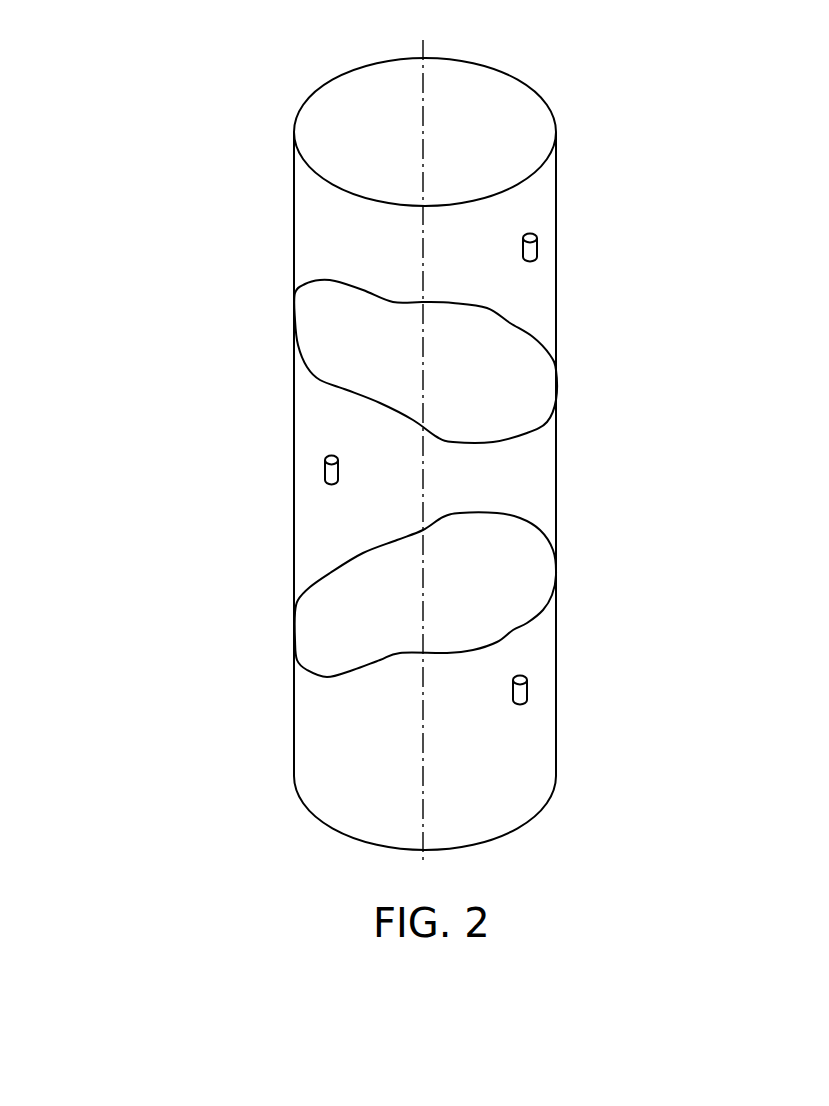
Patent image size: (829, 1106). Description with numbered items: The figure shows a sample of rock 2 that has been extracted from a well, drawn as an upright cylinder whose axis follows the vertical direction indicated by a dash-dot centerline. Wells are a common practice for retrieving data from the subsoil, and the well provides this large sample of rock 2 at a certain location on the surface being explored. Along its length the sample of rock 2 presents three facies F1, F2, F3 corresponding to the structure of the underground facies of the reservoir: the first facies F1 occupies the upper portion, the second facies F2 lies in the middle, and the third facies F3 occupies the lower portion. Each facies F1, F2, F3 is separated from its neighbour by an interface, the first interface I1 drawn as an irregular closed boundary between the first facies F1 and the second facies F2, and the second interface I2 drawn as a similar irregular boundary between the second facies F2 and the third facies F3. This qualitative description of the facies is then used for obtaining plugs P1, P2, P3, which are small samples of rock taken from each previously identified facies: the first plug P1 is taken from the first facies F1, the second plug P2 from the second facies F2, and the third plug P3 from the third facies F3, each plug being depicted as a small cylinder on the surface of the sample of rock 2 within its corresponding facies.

The sample of rock 2 is at (220, 147).
The plug P1 is at (522, 250).
The plug P2 is at (323, 471).
The plug P3 is at (510, 696).
The interface I1 is at (310, 370).
The interface I2 is at (300, 672).
The facies F1 is at (512, 210).
The facies F2 is at (513, 475).
The facies F3 is at (495, 743).